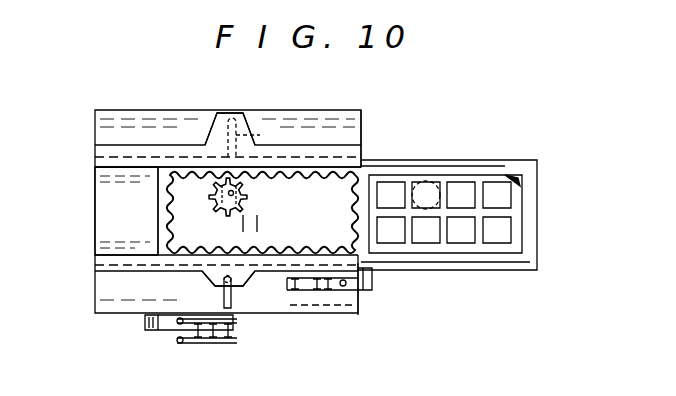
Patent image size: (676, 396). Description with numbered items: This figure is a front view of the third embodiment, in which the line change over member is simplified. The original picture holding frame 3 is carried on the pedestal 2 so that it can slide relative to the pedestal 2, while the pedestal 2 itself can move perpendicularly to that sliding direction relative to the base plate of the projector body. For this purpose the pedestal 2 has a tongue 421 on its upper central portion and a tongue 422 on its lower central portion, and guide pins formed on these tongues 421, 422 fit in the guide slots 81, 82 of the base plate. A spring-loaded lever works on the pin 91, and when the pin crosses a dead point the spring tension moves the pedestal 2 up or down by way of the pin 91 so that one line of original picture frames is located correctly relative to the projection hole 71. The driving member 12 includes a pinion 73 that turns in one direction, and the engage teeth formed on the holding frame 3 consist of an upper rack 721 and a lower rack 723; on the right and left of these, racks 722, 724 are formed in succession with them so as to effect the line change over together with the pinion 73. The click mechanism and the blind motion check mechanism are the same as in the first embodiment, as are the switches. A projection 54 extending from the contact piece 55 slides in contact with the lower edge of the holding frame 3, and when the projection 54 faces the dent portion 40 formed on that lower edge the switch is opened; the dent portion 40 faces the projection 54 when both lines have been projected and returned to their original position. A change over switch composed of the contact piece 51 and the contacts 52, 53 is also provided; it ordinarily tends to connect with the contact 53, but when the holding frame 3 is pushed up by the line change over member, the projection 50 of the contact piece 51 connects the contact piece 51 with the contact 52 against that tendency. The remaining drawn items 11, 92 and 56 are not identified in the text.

The pedestal 2 is at (96, 151).
The original picture holding frame 3 is at (538, 222).
The key 11 is at (497, 195).
The driving member 12 is at (497, 235).
The dent portion 40 is at (360, 298).
The tongue 421 is at (213, 130).
The tongue 422 is at (228, 290).
The pin 91 is at (232, 120).
The guide slot 81 is at (245, 132).
The rack 721 is at (313, 172).
The rack 722 is at (369, 176).
The projection hole 71 is at (424, 180).
The rack 724 is at (176, 199).
The rack 723 is at (197, 254).
The pinion 73 is at (247, 204).
The guide slot 82 is at (232, 280).
The pin 92 is at (300, 300).
The projection 50 is at (146, 322).
The contact piece 51 is at (163, 331).
The contact 52 is at (190, 344).
The contact 53 is at (200, 323).
The projection 54 is at (372, 285).
The contact piece 55 is at (320, 292).
The slider rail 56 is at (345, 290).